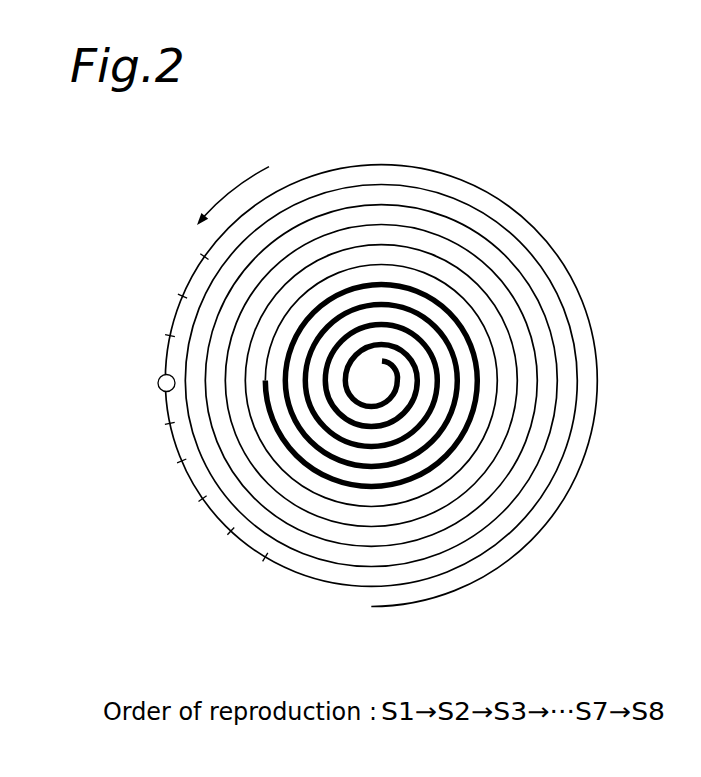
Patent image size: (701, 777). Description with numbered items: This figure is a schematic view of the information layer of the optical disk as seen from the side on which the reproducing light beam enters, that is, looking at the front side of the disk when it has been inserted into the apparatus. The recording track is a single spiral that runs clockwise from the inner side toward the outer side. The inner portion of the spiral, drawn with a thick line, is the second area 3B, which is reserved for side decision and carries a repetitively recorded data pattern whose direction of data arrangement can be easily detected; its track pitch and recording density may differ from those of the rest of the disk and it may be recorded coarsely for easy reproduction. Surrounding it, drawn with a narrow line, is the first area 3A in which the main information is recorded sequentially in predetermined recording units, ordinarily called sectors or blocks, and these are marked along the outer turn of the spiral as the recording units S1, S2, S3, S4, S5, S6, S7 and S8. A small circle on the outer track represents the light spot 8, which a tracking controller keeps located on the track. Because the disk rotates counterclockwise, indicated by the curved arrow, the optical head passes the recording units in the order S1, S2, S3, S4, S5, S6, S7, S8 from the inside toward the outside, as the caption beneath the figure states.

The first area 3A is at (422, 605).
The second area 3B is at (437, 298).
The light spot 8 is at (158, 383).
The recording unit S1 is at (239, 573).
The recording unit S2 is at (206, 543).
The recording unit S3 is at (177, 503).
The recording unit S4 is at (158, 451).
The recording unit S5 is at (148, 408).
The recording unit S6 is at (148, 352).
The recording unit S7 is at (158, 306).
The recording unit S8 is at (183, 263).